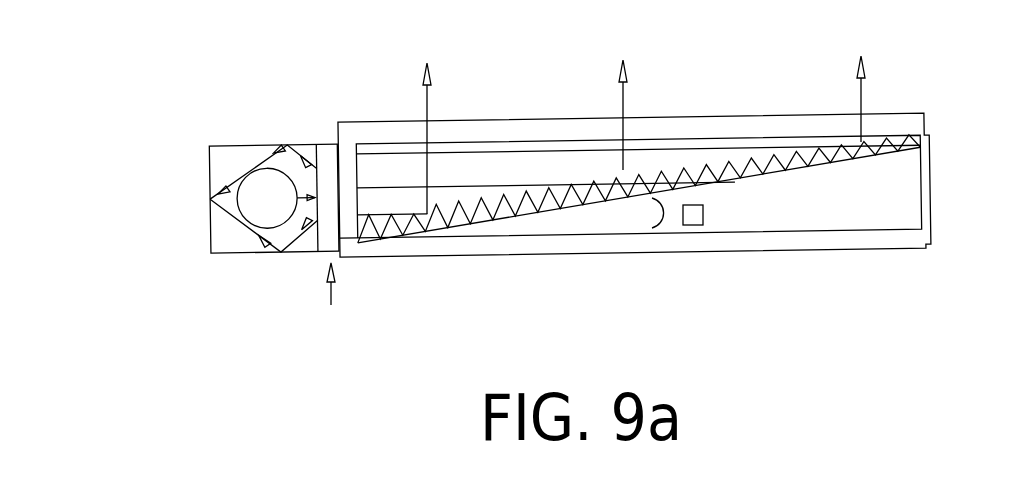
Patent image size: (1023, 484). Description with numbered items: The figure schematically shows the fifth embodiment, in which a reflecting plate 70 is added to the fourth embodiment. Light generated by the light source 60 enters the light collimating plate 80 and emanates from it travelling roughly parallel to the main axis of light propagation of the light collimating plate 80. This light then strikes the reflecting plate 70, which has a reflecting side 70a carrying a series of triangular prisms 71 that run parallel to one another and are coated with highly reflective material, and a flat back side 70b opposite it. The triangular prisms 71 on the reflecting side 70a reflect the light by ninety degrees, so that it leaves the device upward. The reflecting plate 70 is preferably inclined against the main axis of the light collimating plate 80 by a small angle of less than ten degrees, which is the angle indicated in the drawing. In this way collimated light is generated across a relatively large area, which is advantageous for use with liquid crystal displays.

The light source 60 is at (256, 209).
The reflecting plate 70 is at (893, 163).
The reflecting side 70a is at (647, 162).
The flat back side 70b is at (828, 172).
The triangular prisms 71 is at (458, 222).
The light collimating plate 80 is at (331, 302).